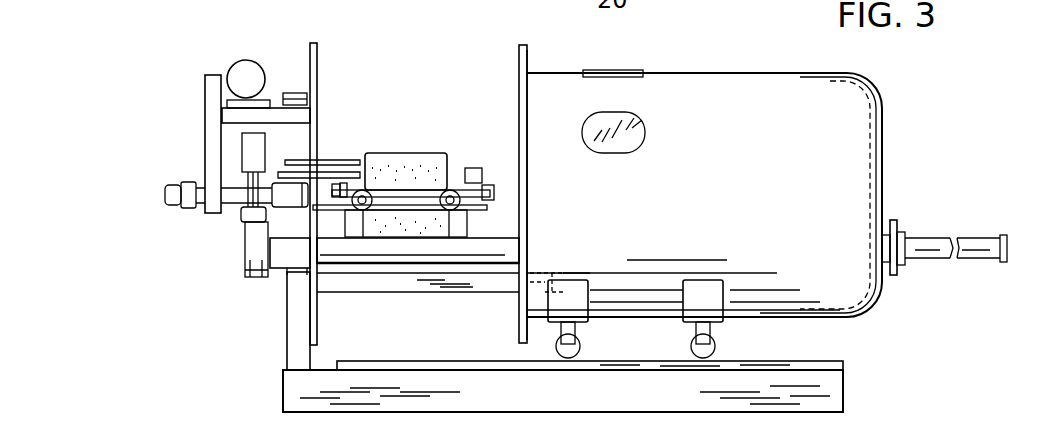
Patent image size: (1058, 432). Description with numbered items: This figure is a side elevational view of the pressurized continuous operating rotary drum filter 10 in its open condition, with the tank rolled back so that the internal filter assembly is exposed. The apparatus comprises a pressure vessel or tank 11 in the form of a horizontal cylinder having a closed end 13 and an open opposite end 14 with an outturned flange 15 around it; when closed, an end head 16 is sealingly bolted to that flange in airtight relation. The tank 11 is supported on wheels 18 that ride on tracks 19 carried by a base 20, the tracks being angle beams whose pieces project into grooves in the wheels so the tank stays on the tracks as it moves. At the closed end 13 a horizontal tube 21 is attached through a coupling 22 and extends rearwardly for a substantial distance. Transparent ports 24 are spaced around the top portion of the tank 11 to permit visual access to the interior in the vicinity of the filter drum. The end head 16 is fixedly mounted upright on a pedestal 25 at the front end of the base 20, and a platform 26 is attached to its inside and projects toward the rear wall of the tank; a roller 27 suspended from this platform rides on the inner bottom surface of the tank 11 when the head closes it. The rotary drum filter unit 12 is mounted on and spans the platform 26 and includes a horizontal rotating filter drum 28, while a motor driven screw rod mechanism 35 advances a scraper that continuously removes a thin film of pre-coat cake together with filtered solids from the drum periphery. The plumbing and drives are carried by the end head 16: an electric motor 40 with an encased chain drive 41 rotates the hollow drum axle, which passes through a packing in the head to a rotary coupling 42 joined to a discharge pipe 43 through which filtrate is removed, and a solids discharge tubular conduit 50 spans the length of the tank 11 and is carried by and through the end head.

The pressurized continuous operating rotary drum filter 10 is at (724, 66).
The tank 11 is at (770, 94).
The rotary drum filter unit 12 is at (408, 138).
The closed end 13 is at (883, 128).
The open end 14 is at (518, 72).
The outturned flange 15 is at (528, 62).
The end head 16 is at (316, 64).
The wheels 18 is at (584, 348).
The tracks 19 is at (830, 363).
The base 20 is at (838, 398).
The horizontal tube 21 is at (943, 246).
The coupling 22 is at (895, 232).
The transparent ports 24 is at (636, 126).
The pedestal 25 is at (293, 312).
The platform 26 is at (443, 283).
The roller 27 is at (548, 270).
The filter drum 28 is at (364, 178).
The screw rod mechanism 35 is at (456, 186).
The electric motor 40 is at (247, 75).
The encased chain drive 41 is at (210, 98).
The rotary coupling 42 is at (190, 208).
The discharge pipe 43 is at (172, 205).
The solids discharge tubular conduit 50 is at (392, 254).